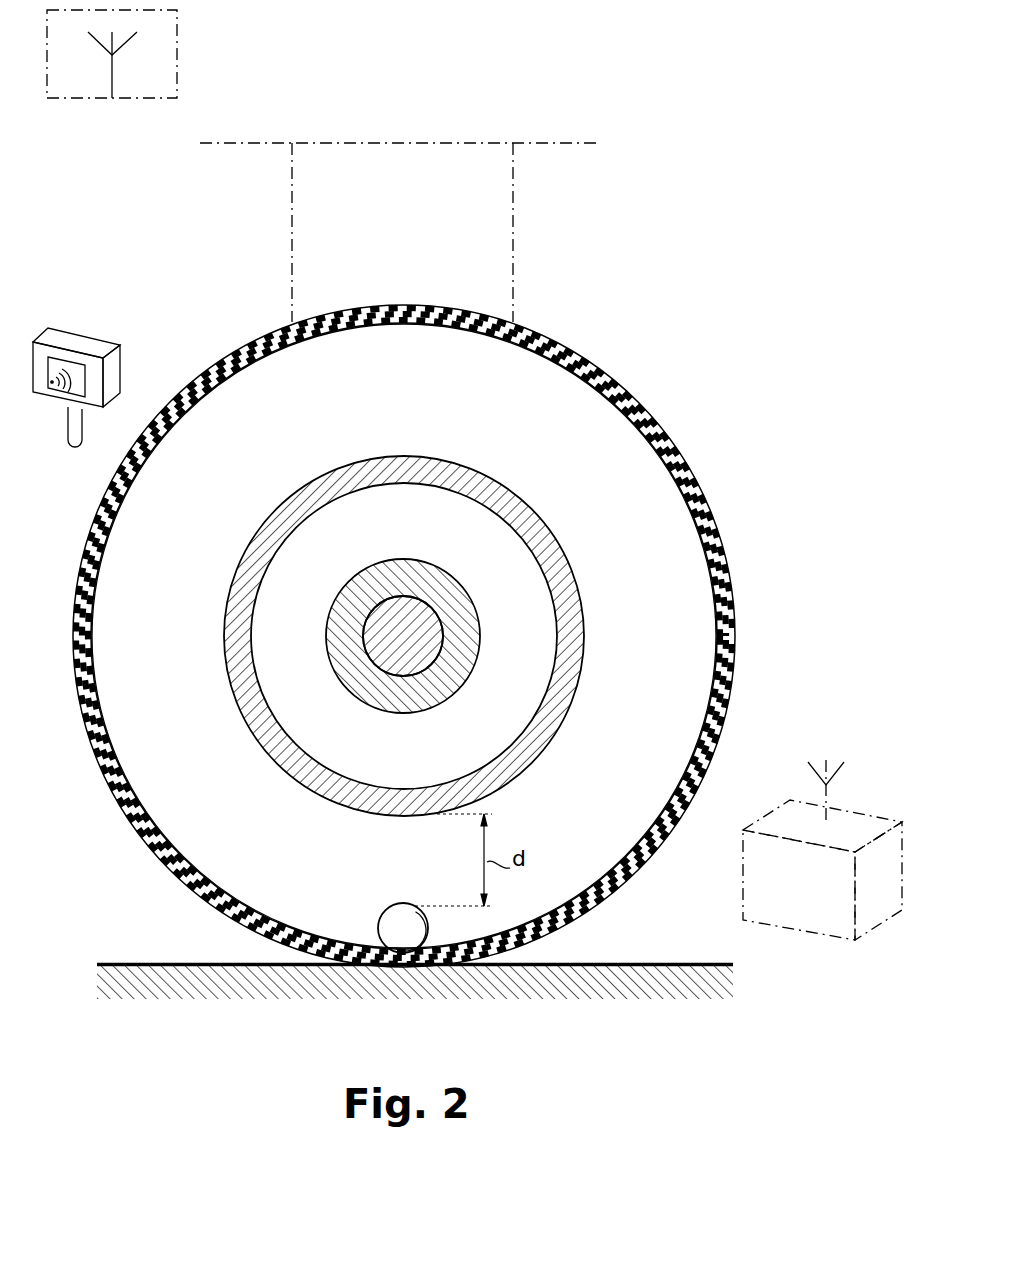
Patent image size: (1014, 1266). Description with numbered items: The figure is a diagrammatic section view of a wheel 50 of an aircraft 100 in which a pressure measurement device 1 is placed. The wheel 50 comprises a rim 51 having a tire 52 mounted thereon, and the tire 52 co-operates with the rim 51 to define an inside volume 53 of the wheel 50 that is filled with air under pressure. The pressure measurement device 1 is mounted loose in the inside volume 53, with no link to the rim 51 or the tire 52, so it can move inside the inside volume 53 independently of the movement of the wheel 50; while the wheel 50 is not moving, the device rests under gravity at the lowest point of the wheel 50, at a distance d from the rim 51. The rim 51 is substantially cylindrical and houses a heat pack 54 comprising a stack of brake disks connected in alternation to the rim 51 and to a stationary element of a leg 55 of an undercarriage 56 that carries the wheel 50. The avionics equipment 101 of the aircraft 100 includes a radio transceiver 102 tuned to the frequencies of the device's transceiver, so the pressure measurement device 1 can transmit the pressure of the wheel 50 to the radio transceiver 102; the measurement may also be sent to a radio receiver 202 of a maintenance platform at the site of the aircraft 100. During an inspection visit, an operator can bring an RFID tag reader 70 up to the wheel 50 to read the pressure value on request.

The pressure measurement device 1 is at (390, 920).
The wheel 50 is at (434, 629).
The rim 51 is at (575, 582).
The tire 52 is at (690, 465).
The inside volume 53 is at (545, 380).
The heat pack 54 is at (520, 637).
The leg 55 is at (513, 232).
The undercarriage 56 is at (222, 290).
The RFID tag reader 70 is at (78, 345).
The aircraft 100 is at (241, 154).
The avionics equipment 101 is at (156, 78).
The radio transceiver 102 is at (100, 100).
The radio receiver 202 is at (808, 913).